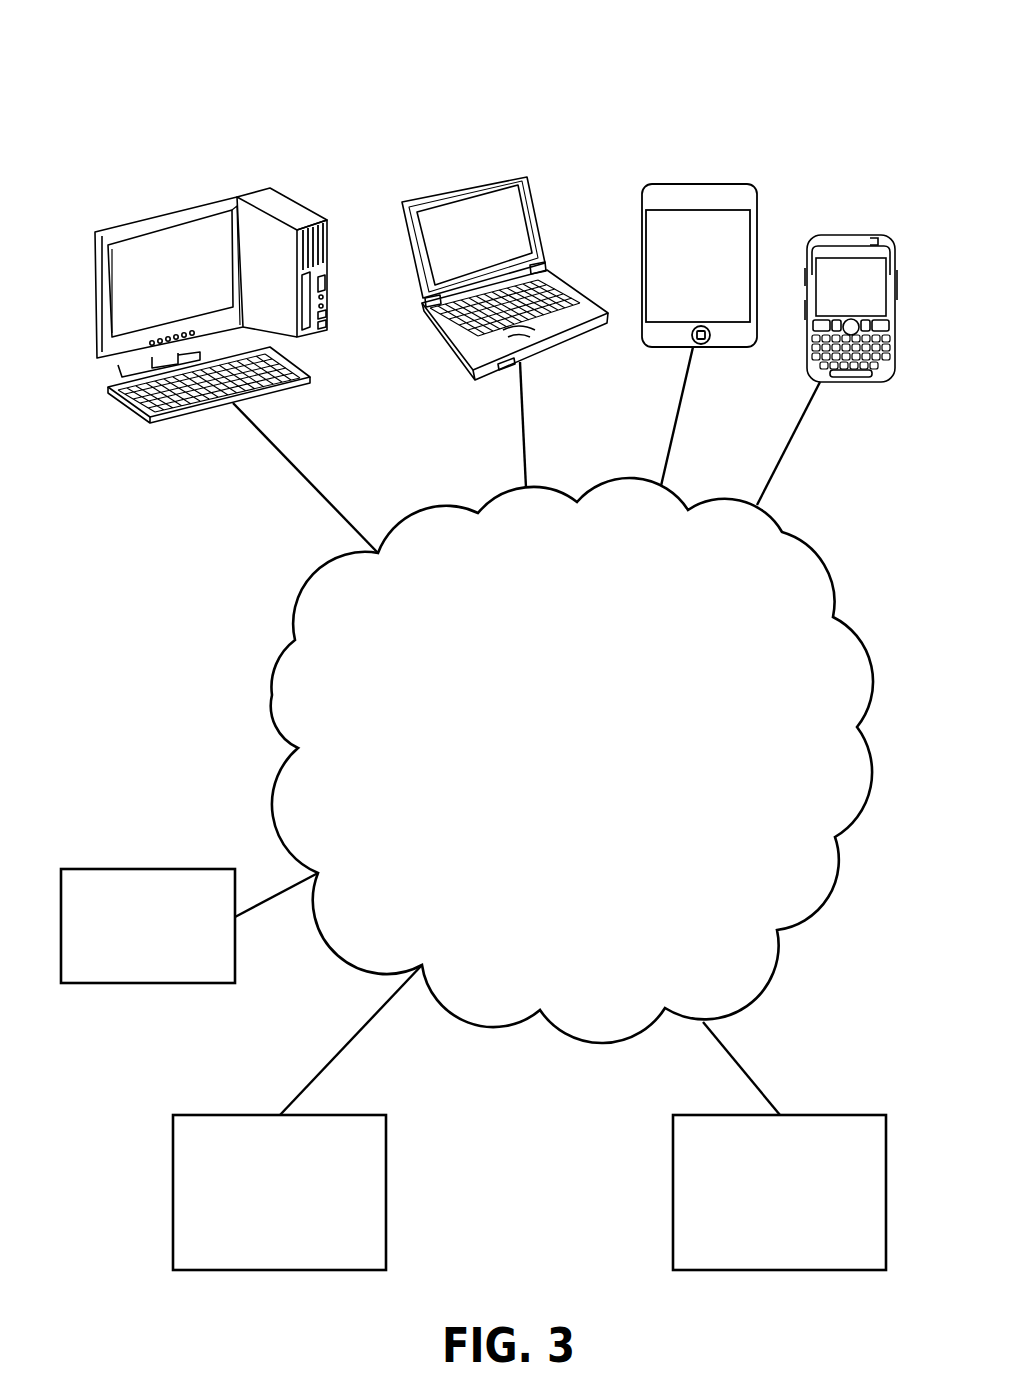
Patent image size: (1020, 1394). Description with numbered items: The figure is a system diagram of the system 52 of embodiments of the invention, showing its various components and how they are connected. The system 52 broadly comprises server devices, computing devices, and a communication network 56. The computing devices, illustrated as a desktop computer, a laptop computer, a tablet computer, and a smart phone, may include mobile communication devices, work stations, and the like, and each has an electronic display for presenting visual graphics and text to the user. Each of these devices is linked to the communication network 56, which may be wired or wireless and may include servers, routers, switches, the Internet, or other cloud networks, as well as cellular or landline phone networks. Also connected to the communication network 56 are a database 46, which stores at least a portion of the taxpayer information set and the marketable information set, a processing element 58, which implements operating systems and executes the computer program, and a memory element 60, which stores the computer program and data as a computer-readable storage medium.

The system 52 is at (157, 125).
The communication network 56 is at (866, 641).
The database 46 is at (112, 868).
The processing element 58 is at (168, 1196).
The memory element 60 is at (662, 1185).